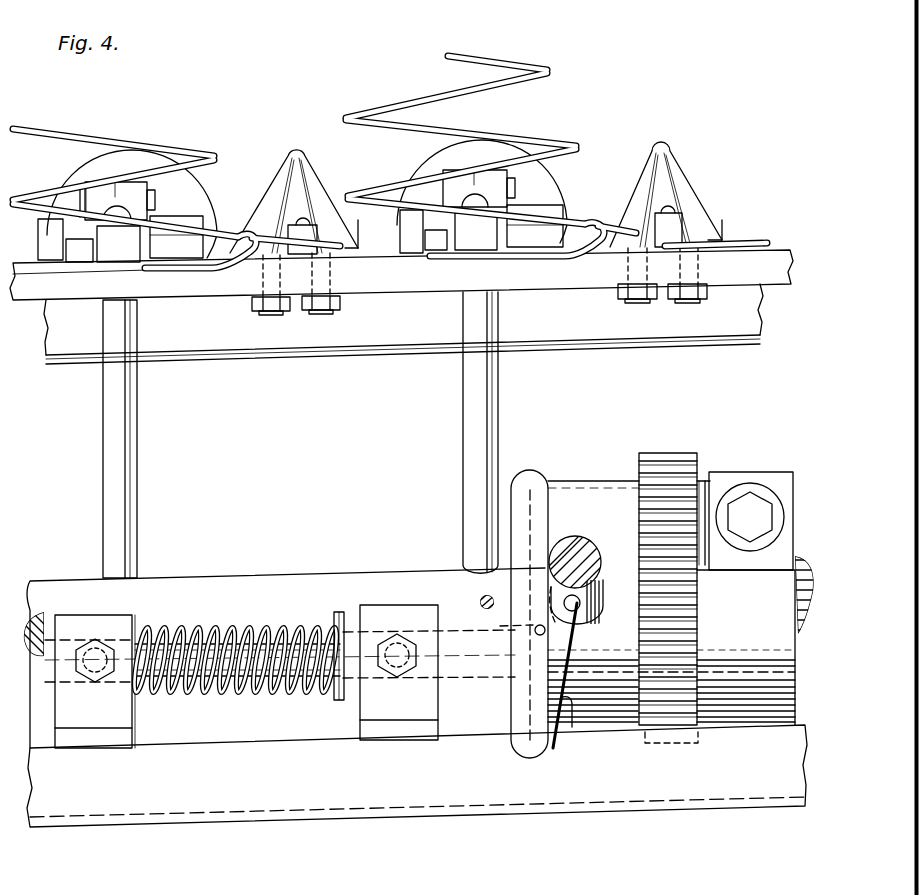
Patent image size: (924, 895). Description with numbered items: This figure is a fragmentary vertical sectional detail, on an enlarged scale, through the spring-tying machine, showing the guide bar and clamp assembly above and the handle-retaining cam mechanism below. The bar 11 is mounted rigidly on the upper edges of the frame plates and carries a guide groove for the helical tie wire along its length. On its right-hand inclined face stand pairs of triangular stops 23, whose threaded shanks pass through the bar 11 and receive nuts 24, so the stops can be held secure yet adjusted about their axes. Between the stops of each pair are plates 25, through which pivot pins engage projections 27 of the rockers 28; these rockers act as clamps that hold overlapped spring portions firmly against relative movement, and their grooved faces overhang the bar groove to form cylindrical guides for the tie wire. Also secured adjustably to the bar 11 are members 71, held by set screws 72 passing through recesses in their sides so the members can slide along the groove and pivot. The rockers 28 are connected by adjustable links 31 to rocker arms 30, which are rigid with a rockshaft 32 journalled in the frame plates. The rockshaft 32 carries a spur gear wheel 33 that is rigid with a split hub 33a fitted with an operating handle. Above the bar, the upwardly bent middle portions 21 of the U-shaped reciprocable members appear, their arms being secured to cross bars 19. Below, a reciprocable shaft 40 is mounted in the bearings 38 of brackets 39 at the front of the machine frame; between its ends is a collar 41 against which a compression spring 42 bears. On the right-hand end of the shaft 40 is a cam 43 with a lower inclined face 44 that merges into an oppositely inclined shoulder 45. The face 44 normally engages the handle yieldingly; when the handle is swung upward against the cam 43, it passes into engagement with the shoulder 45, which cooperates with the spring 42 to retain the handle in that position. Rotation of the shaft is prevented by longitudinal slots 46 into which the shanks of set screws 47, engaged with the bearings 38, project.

The bar 11 is at (540, 286).
The cross bars 19 is at (375, 222).
The middle portions of U-shaped reciprocable members 21 is at (143, 118).
The stops 23 is at (305, 132).
The nuts 24 is at (290, 312).
The plates 25 is at (87, 248).
The projections of rockers 27 is at (42, 252).
The rockers 28 is at (182, 213).
The rocker arms 30 is at (137, 410).
The adjustable links 31 is at (130, 207).
The rockshaft 32 is at (278, 572).
The spur gear wheel 33 is at (700, 452).
The split hub 33a is at (752, 611).
The bearings 38 is at (106, 602).
The brackets 39 is at (610, 530).
The reciprocable shaft 40 is at (262, 626).
The collar 41 is at (338, 694).
The compression spring 42 is at (196, 690).
The cam 43 is at (530, 480).
The lower inclined face 44 is at (564, 700).
The shoulder 45 is at (580, 605).
The longitudinal slots 46 is at (136, 624).
The set screws 47 is at (98, 656).
The members 71 is at (305, 240).
The set screws 72 is at (303, 221).